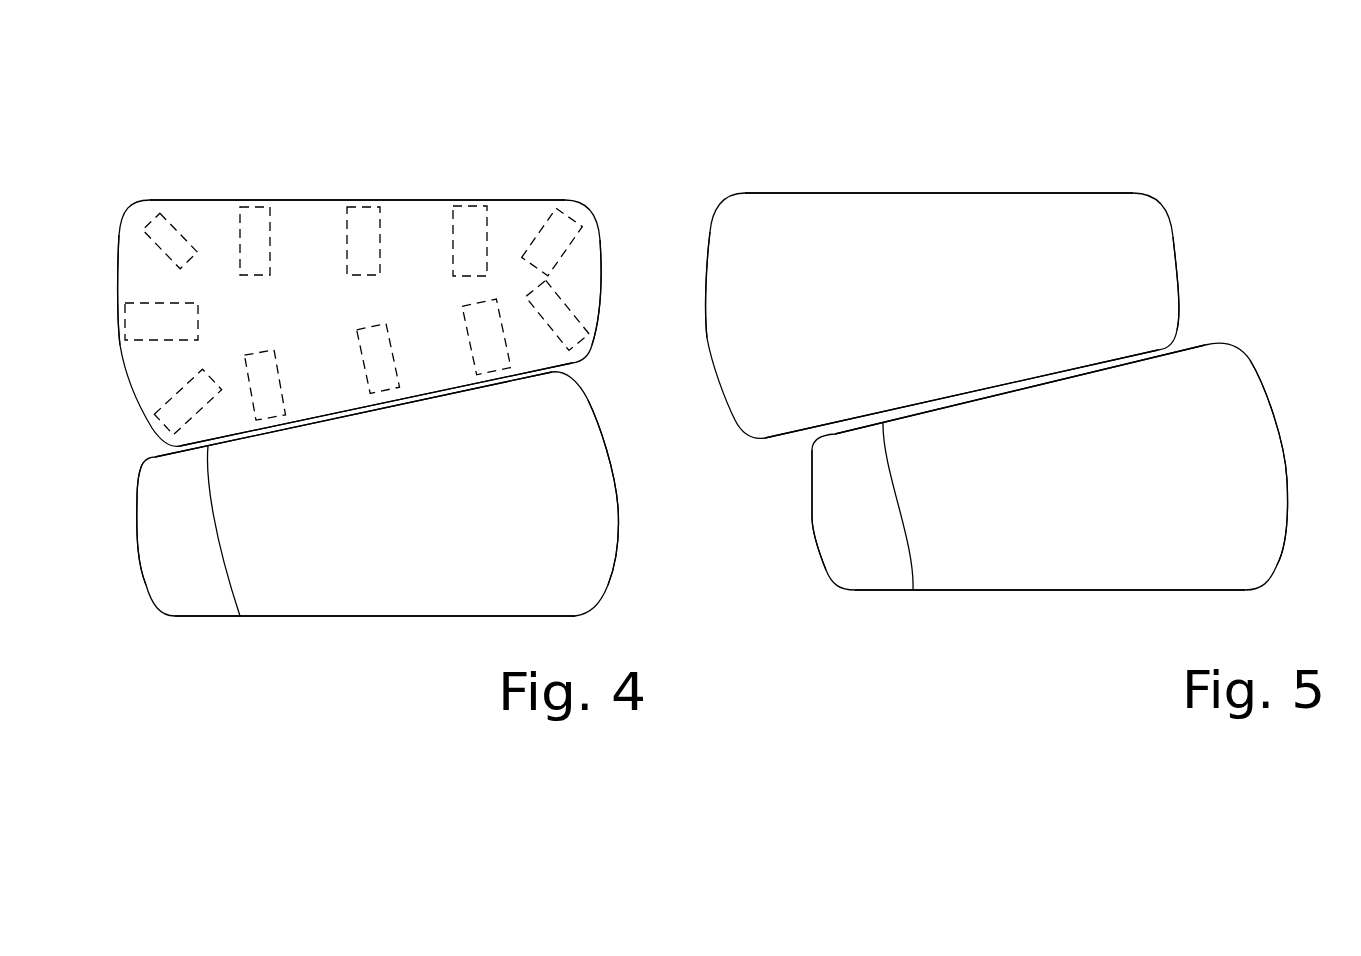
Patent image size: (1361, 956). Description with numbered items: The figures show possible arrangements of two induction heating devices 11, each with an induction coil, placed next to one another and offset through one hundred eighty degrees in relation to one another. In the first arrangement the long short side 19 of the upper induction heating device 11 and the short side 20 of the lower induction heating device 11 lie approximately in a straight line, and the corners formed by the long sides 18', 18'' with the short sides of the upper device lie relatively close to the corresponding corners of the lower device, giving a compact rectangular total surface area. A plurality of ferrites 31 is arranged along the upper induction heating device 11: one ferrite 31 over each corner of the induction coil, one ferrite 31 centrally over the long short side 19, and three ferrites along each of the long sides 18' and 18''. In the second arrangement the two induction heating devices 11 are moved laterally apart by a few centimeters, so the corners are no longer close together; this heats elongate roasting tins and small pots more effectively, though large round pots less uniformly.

In FIG. 4, the induction heating device 11 is at (367, 320).
In FIG. 5, the induction heating device 11 is at (949, 317).
In FIG. 4, the long side 18' is at (362, 421).
In FIG. 5, the long side 18' is at (995, 406).
In FIG. 4, the long side 18'' is at (425, 498).
In FIG. 5, the long side 18'' is at (954, 505).
In FIG. 4, the long short side 19 is at (120, 345).
In FIG. 5, the long short side 19 is at (706, 338).
In FIG. 4, the short side 20 is at (592, 235).
In FIG. 5, the short side 20 is at (1172, 228).
In FIG. 4, the ferrite 31 is at (257, 212).